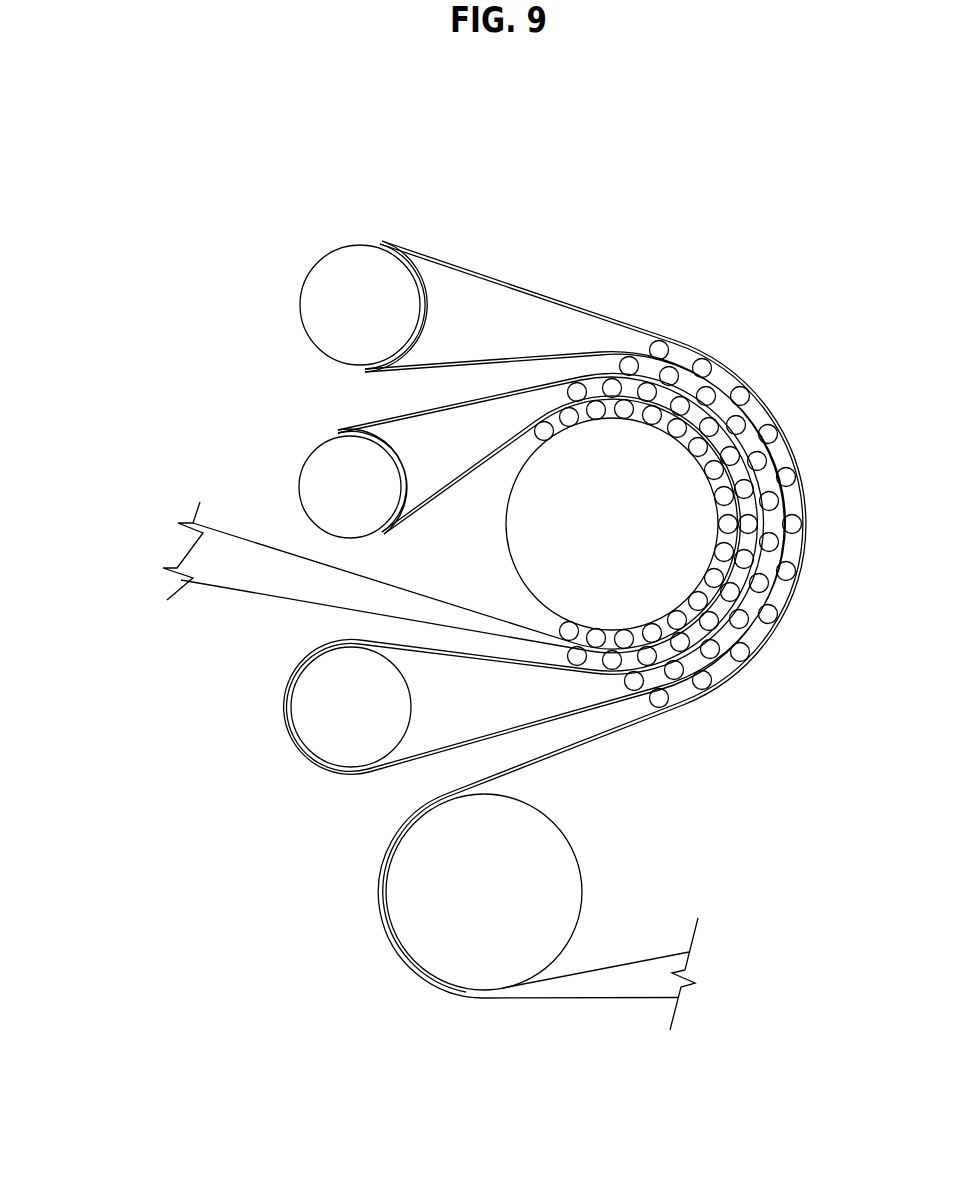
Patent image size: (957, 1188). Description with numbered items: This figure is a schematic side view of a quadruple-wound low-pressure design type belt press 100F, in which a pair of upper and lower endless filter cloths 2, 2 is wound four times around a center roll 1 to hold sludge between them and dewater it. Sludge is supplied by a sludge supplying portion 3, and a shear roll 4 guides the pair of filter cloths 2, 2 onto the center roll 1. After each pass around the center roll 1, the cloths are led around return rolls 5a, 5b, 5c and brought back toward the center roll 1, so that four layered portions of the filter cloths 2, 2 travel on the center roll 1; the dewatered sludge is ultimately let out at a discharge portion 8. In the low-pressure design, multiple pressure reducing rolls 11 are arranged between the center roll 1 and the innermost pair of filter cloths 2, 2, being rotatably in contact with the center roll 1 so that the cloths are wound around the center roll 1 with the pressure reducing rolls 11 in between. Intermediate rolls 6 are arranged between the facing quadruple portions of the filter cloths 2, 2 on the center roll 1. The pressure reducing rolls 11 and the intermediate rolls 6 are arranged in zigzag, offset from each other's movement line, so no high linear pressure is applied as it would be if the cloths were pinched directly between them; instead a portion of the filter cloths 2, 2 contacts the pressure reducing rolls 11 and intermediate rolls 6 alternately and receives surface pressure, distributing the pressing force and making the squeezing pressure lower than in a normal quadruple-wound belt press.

The belt press 100F is at (683, 163).
The center roll 1 is at (604, 437).
The pressure reducing rolls 11 is at (724, 513).
The intermediate rolls 6 is at (706, 362).
The sludge supplying portion 3 is at (724, 958).
The discharge portion 8 is at (126, 533).
The filter cloths 2 is at (628, 1000).
The return roll 5a is at (360, 265).
The return roll 5b is at (303, 713).
The return roll 5c is at (320, 488).
The shear roll 4 is at (405, 896).